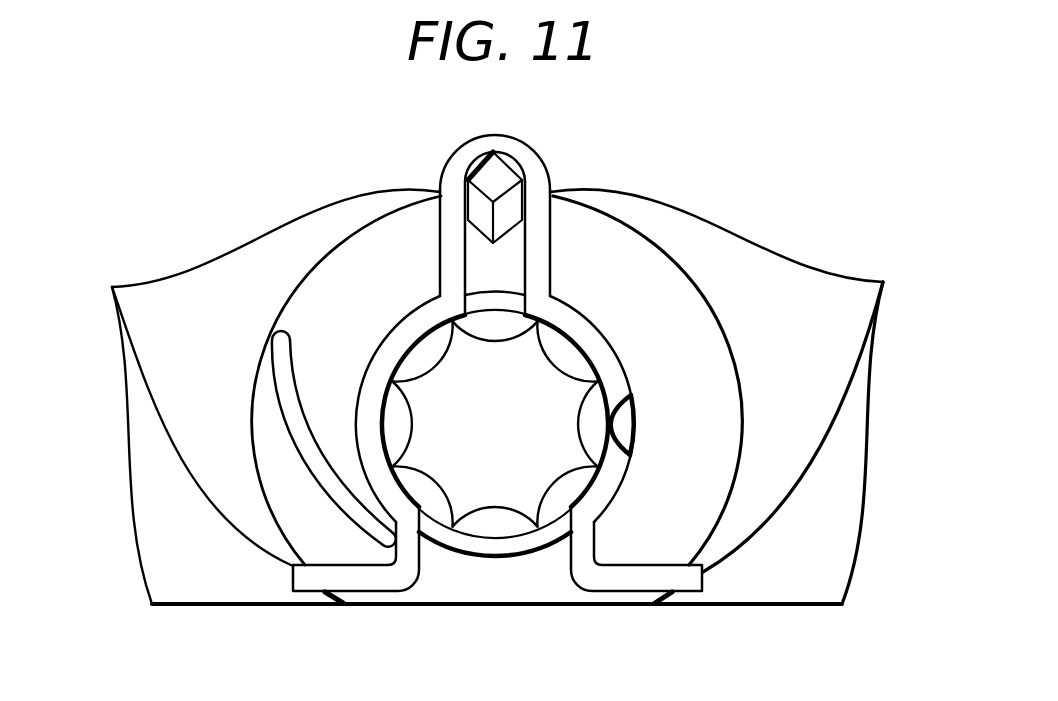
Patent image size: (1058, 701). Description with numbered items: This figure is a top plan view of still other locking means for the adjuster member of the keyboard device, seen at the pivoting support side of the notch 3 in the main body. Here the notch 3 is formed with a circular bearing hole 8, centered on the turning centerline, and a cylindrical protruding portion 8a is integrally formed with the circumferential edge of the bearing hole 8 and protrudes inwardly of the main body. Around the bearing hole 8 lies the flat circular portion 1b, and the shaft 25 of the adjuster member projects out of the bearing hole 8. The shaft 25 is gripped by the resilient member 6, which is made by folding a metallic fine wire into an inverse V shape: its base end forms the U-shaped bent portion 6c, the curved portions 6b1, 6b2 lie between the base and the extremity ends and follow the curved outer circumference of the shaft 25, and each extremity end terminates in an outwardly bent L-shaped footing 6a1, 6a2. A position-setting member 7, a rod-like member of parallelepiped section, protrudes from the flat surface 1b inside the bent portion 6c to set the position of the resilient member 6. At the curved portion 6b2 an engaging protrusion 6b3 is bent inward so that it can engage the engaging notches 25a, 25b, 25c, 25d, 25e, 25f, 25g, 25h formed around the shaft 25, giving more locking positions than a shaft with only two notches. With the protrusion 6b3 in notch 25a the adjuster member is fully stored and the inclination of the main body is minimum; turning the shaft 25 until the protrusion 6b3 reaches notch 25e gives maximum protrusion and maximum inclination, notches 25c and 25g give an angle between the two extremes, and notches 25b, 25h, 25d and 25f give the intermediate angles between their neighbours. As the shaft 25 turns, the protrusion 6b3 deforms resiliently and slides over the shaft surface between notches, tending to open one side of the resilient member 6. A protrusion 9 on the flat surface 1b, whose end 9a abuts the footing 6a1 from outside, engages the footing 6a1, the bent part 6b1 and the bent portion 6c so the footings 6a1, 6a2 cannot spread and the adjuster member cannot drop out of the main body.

The notch 3 is at (858, 325).
The circular portion 1b is at (723, 367).
The resilient member 6 is at (500, 376).
The U-shaped bent portion 6c is at (515, 148).
The curved portion 6b1 is at (396, 342).
The curved portion 6b2 is at (612, 367).
The engaging protrusion 6b3 is at (603, 427).
The L-shaped footing 6a1 is at (358, 585).
The L-shaped footing 6a2 is at (635, 580).
The position-setting member 7 is at (503, 176).
The bearing hole 8 is at (495, 473).
The cylindrical protruding portion 8a is at (455, 544).
The shaft 25 is at (517, 414).
The engaging notch 25a is at (590, 426).
The engaging notch 25b is at (557, 485).
The engaging notch 25c is at (493, 510).
The engaging notch 25d is at (437, 487).
The engaging notch 25e is at (405, 423).
The engaging notch 25f is at (437, 362).
The engaging notch 25g is at (493, 341).
The engaging notch 25h is at (553, 362).
The protrusion 9 is at (305, 445).
The tip of spring tab 9a is at (392, 541).